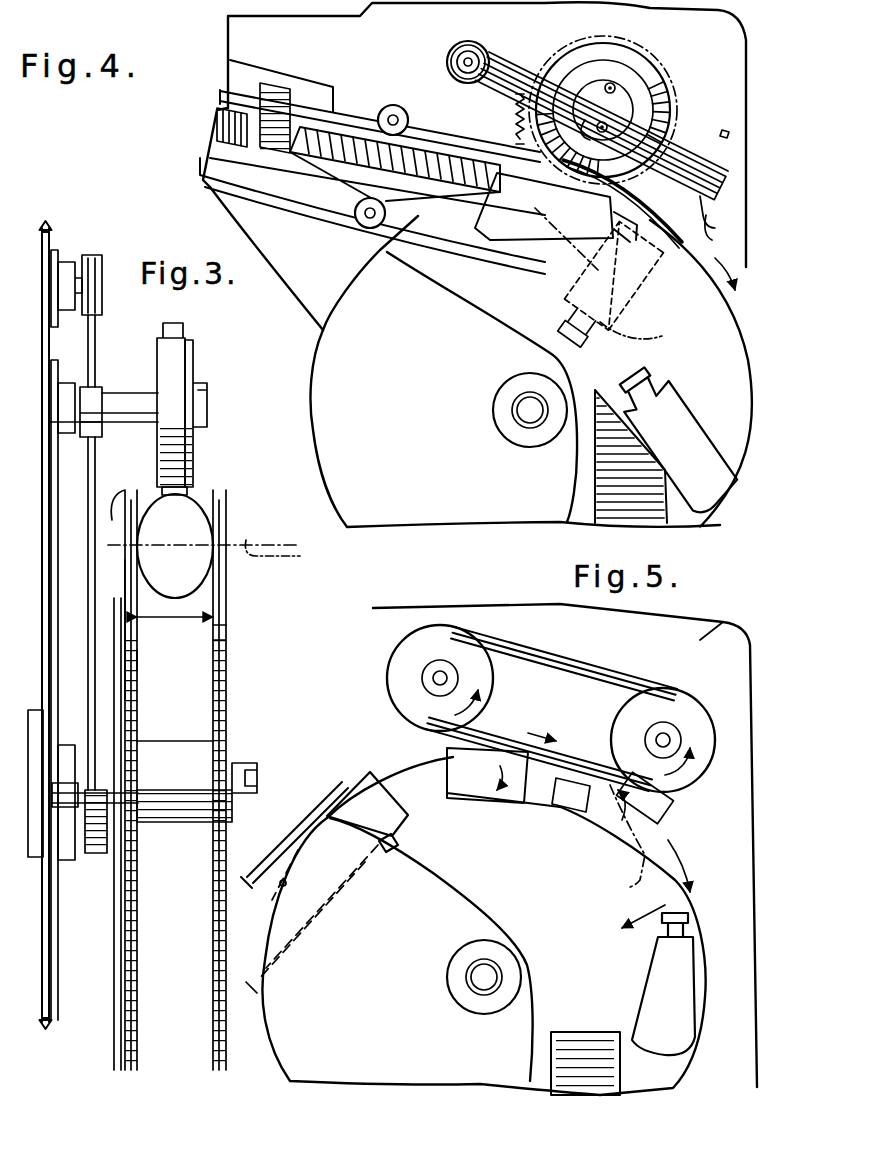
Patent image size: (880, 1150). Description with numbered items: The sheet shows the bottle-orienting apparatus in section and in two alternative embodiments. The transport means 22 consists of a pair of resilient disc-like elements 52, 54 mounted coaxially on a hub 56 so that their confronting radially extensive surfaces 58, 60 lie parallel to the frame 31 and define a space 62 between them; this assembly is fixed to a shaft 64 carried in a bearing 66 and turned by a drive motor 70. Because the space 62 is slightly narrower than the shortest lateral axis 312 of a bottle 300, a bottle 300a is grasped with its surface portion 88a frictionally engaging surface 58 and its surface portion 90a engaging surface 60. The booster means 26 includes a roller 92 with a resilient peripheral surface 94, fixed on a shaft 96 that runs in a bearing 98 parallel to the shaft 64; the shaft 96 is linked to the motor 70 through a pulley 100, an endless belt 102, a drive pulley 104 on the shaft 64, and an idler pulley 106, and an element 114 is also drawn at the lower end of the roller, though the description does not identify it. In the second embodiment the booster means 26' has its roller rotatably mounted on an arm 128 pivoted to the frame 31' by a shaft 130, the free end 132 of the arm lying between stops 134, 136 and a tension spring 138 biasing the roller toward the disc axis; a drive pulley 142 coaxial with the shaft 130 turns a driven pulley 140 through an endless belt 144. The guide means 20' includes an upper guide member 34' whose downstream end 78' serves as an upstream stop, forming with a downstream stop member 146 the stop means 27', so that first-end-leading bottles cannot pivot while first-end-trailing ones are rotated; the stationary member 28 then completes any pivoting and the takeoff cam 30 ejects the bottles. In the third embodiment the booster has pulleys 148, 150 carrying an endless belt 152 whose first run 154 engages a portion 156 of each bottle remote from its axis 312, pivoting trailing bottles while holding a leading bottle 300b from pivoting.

In FIG. 3, the idler pulley 106 is at (100, 268).
In FIG. 3, the bearing 98 is at (72, 382).
In FIG. 3, the shaft 96 is at (122, 424).
In FIG. 3, the surface portion 90a is at (124, 520).
In FIG. 3, the pulley 100 is at (84, 436).
In FIG. 3, the roller 92 is at (200, 360).
In FIG. 3, the booster means 26 is at (218, 413).
In FIG. 3, the resilient peripheral surface 94 is at (180, 450).
In FIG. 3, the coupling 114 is at (190, 490).
In FIG. 3, the bottle 300a is at (200, 515).
In FIG. 4, the bottle 300a is at (500, 222).
In FIG. 3, the surface portion 88a is at (214, 528).
In FIG. 3, the lateral axis 312 is at (288, 552).
In FIG. 4, the lateral axis 312 is at (585, 225).
In FIG. 5, the lateral axis 312 is at (485, 779).
In FIG. 3, the disc-like element 54 is at (130, 561).
In FIG. 4, the disc-like element 54 is at (730, 338).
In FIG. 5, the disc-like element 54 is at (695, 932).
In FIG. 3, the disc-like element 52 is at (227, 588).
In FIG. 4, the disc-like element 52 is at (346, 304).
In FIG. 5, the disc-like element 52 is at (307, 1062).
In FIG. 3, the endless belt 102 is at (90, 610).
In FIG. 3, the space 62 is at (218, 633).
In FIG. 5, the space 62 is at (688, 904).
In FIG. 3, the radially extensive surface 58 is at (220, 643).
In FIG. 3, the frame 31 is at (62, 625).
In FIG. 3, the radially extensive surface 60 is at (139, 658).
In FIG. 3, the transport means 22 is at (238, 683).
In FIG. 3, the drive motor 70 is at (42, 720).
In FIG. 3, the bearing 66 is at (66, 748).
In FIG. 3, the hub 56 is at (180, 742).
In FIG. 3, the shaft 64 is at (72, 860).
In FIG. 3, the drive pulley 104 is at (107, 855).
In FIG. 4, the drive pulley 142 is at (470, 42).
In FIG. 4, the shaft 130 is at (447, 60).
In FIG. 4, the endless belt 144 is at (538, 60).
In FIG. 4, the pulley 140 is at (603, 82).
In FIG. 4, the booster means 26' is at (649, 78).
In FIG. 4, the arm 128 is at (700, 160).
In FIG. 4, the stop 136 is at (725, 138).
In FIG. 4, the free end 132 is at (704, 202).
In FIG. 4, the stop 134 is at (727, 234).
In FIG. 4, the upper guide member 34' is at (401, 157).
In FIG. 4, the tension spring 138 is at (512, 110).
In FIG. 4, the downstream end 78' is at (395, 158).
In FIG. 4, the stop means 27' is at (579, 162).
In FIG. 4, the frame 31' is at (474, 165).
In FIG. 4, the downstream stop member 146 is at (665, 230).
In FIG. 4, the guide means 20' is at (372, 167).
In FIG. 4, the stationary member 28 is at (592, 466).
In FIG. 4, the takeoff cam 30 is at (660, 508).
In FIG. 5, the takeoff cam 30 is at (573, 1034).
In FIG. 5, the pulley 150 is at (444, 638).
In FIG. 5, the endless belt 152 is at (541, 645).
In FIG. 5, the portion 156 is at (452, 752).
In FIG. 5, the pulley 148 is at (705, 762).
In FIG. 5, the first run 154 is at (658, 816).
In FIG. 5, the bottle 300 is at (516, 802).
In FIG. 5, the bottle 300b is at (632, 856).